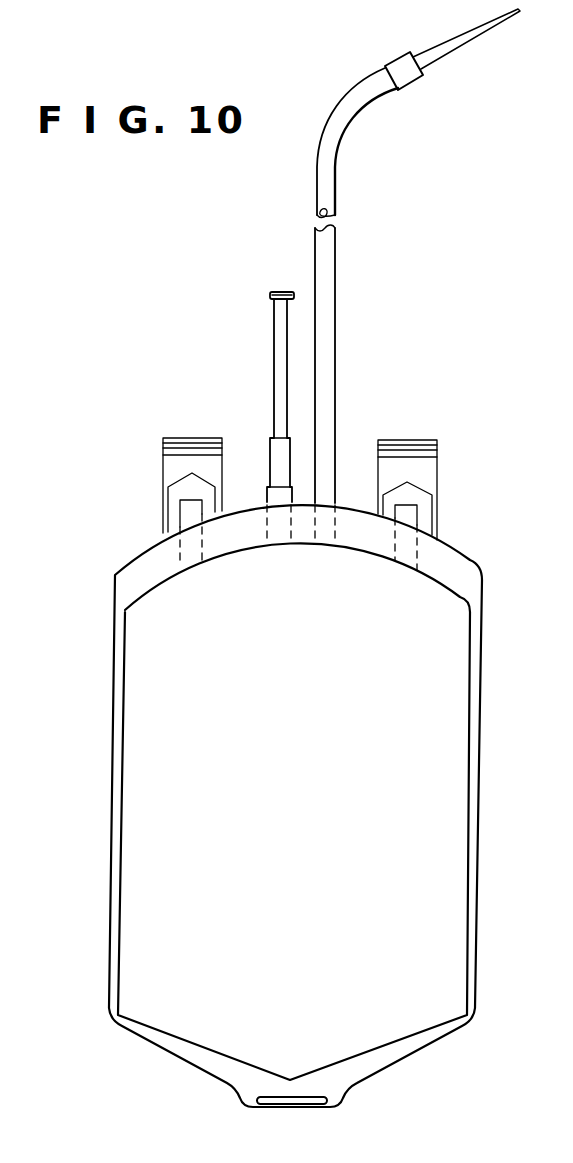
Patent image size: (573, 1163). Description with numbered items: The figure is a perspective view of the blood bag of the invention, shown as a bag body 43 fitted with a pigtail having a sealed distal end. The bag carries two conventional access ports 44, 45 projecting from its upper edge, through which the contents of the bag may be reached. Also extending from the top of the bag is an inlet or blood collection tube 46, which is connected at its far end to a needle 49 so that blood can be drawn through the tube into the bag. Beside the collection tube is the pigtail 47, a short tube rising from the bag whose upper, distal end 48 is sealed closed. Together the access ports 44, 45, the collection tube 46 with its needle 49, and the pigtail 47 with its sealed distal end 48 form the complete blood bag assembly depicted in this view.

The blood bag 43 is at (128, 790).
The access port 44 is at (184, 438).
The access port 45 is at (415, 440).
The inlet or blood collection tube 46 is at (337, 279).
The pigtail 47 is at (271, 341).
The sealed distal end 48 is at (280, 292).
The needle 49 is at (463, 44).